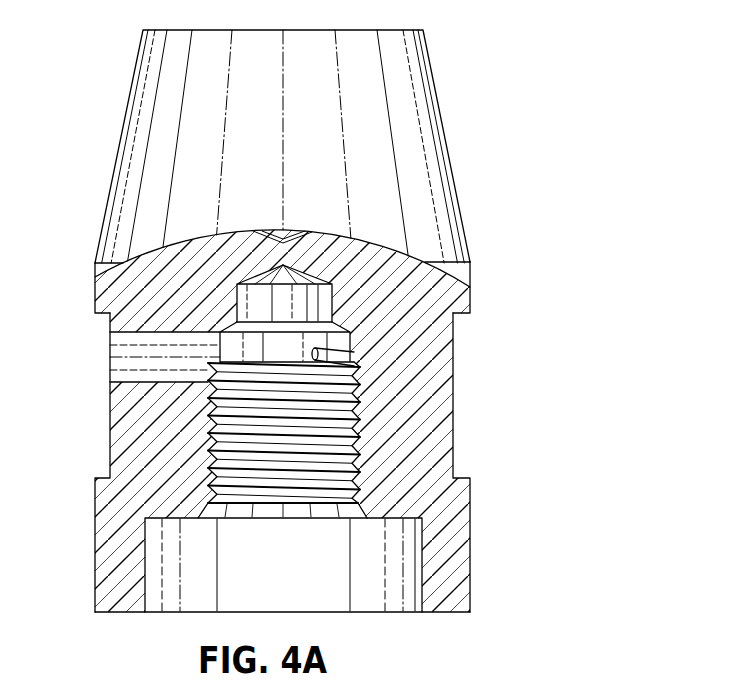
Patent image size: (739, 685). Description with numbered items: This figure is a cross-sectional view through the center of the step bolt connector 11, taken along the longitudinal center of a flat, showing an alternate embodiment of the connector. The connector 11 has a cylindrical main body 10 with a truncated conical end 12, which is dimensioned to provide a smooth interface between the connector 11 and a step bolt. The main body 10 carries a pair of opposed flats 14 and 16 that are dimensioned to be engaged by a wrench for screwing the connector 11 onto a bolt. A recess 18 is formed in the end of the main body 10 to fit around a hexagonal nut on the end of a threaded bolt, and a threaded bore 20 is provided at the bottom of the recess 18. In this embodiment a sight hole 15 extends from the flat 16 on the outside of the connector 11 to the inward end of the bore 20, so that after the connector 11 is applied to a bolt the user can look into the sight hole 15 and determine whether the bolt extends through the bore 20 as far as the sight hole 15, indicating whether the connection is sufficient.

The cylindrical main body 10 is at (407, 288).
The step bolt connector 11 is at (339, 321).
The truncated conical end 12 is at (417, 127).
The flat 14 is at (453, 448).
The sight hole 15 is at (128, 357).
The flat 16 is at (110, 442).
The recess 18 is at (470, 552).
The threaded bore 20 is at (358, 363).